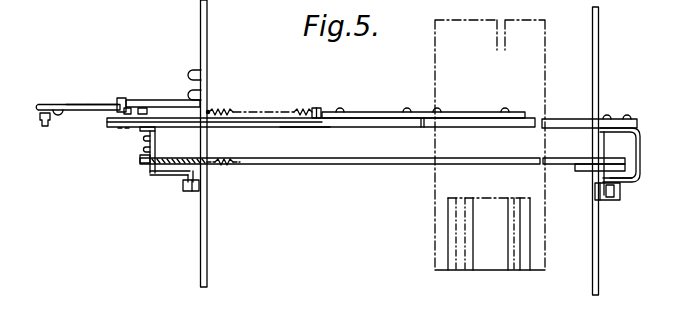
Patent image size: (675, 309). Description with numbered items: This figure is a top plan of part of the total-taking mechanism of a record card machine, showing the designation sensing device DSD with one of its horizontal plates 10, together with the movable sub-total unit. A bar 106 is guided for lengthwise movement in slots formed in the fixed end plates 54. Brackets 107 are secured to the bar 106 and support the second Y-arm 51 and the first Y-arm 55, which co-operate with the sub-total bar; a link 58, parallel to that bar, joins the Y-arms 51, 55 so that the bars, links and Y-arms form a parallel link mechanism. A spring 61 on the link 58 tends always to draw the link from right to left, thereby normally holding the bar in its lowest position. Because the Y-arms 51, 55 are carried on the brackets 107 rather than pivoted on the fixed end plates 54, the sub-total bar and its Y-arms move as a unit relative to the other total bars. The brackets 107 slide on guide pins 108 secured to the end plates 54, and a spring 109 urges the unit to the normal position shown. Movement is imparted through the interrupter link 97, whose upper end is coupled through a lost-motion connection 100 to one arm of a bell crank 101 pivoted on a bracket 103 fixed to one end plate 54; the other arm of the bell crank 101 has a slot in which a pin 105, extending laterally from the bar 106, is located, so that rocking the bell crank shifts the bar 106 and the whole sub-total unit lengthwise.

The horizontal plate 10 is at (300, 128).
The second Y-arm 51 is at (160, 172).
The end plate 54 is at (208, 203).
The first Y-arm 55 is at (629, 184).
The link 58 is at (360, 164).
The spring 61 is at (229, 163).
The interrupter link 97 is at (72, 104).
The lost-motion connection 100 is at (33, 112).
The bell crank 101 is at (93, 104).
The bracket 103 is at (157, 101).
The pin 105 is at (125, 100).
The bar 106 is at (395, 128).
The bracket 107 is at (152, 165).
The guide pin 108 is at (185, 188).
The spring 109 is at (307, 114).
The designation sensing device DSD is at (479, 231).